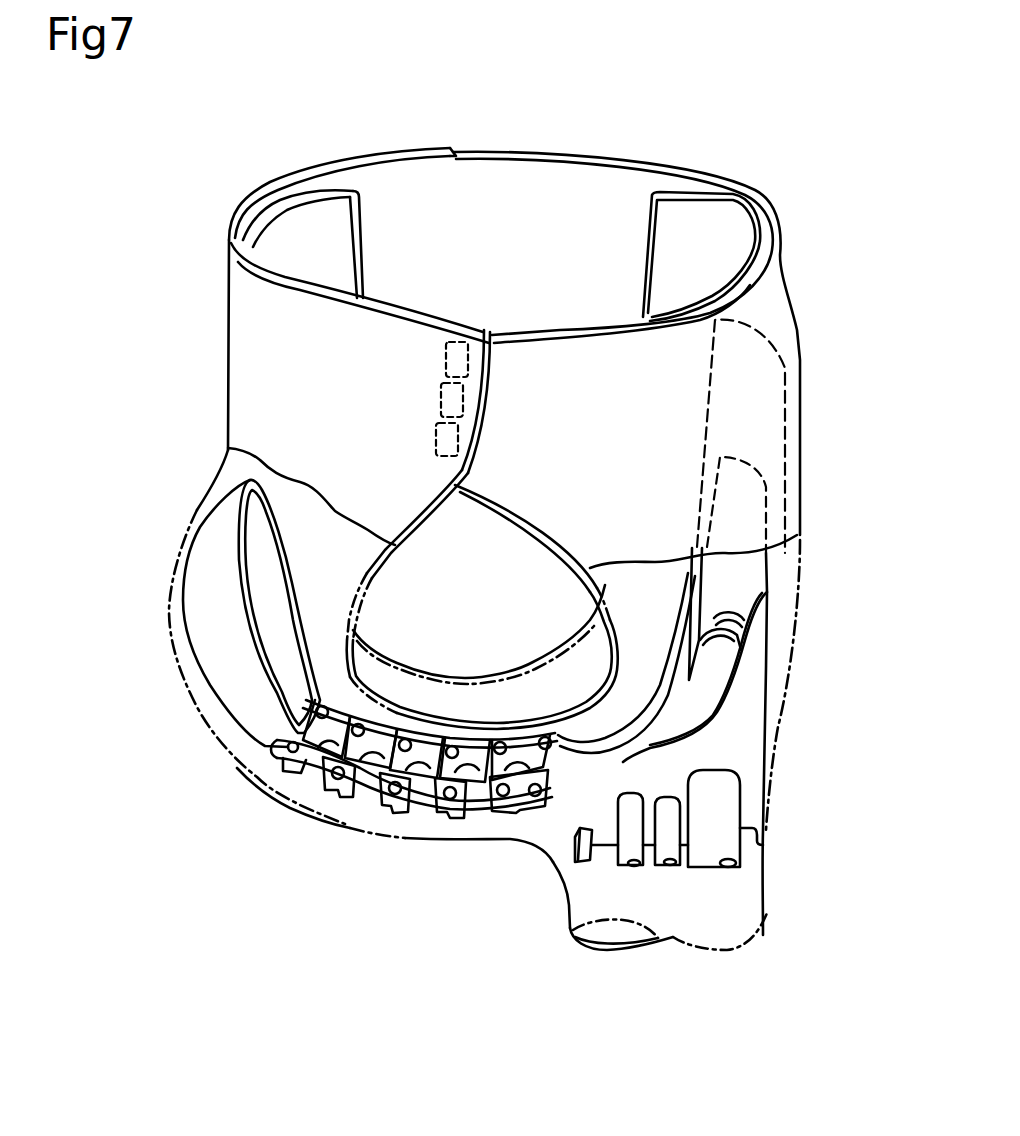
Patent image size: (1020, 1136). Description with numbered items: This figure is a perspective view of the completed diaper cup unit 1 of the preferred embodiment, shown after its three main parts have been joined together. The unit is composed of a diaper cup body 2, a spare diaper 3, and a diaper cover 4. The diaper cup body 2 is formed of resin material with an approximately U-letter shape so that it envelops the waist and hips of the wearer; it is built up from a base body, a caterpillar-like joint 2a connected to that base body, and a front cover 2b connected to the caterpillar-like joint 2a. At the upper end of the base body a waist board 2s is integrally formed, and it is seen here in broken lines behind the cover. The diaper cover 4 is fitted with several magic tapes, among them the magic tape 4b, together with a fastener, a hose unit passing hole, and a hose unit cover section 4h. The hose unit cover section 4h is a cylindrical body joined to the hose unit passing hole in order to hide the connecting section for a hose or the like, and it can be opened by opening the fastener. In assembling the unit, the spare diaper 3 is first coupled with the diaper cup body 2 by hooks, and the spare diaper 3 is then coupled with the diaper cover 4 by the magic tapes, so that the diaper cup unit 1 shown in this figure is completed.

The diaper cup unit 1 is at (205, 755).
The diaper cup body 2 is at (735, 752).
The caterpillar-like joint 2a is at (397, 830).
The front cover 2b is at (210, 602).
The waist board 2s is at (763, 412).
The spare diaper 3 is at (303, 253).
The diaper cover 4 is at (229, 417).
The magic tape 4b is at (447, 359).
The hose unit cover section 4h is at (750, 903).